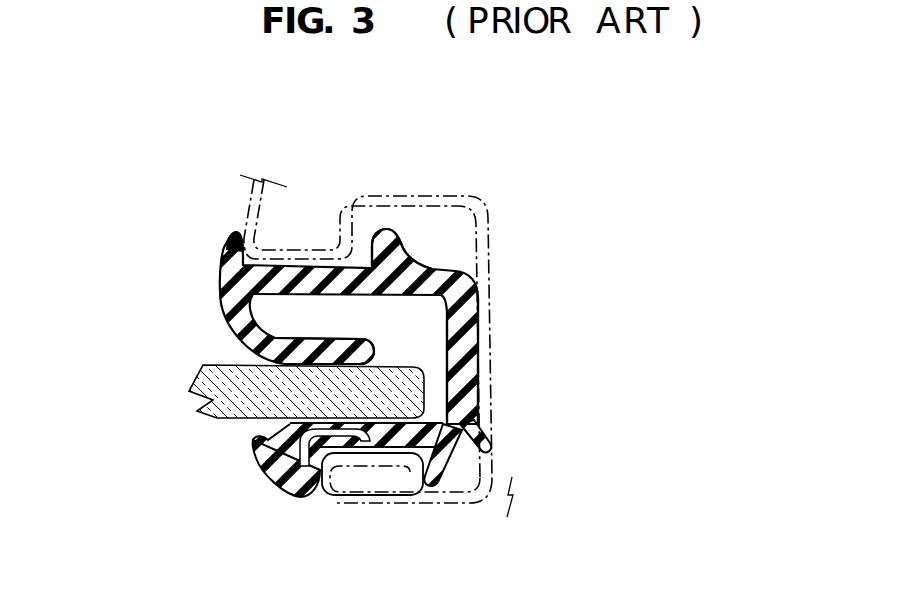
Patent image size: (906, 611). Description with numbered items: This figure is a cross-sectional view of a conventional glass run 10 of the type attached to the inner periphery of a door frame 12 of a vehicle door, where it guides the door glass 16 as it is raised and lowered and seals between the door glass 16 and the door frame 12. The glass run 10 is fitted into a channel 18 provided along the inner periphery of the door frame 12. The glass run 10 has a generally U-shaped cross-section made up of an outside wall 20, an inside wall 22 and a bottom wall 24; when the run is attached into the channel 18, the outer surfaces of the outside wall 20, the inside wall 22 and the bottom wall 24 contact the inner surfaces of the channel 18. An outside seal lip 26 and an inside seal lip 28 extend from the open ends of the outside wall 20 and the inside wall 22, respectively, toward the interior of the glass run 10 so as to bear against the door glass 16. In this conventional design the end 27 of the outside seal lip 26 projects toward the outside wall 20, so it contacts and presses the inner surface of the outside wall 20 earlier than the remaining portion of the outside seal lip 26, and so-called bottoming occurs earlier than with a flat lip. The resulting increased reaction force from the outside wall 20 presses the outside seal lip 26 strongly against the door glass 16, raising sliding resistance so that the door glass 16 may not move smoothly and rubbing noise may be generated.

The glass run 10 is at (222, 263).
The door frame 12 is at (450, 505).
The door glass 16 is at (255, 365).
The channel 18 is at (376, 196).
The outside wall 20 is at (393, 437).
The inside wall 22 is at (345, 272).
The bottom wall 24 is at (459, 364).
The outside seal lip 26 is at (215, 416).
The end 27 is at (367, 425).
The inside seal lip 28 is at (243, 342).